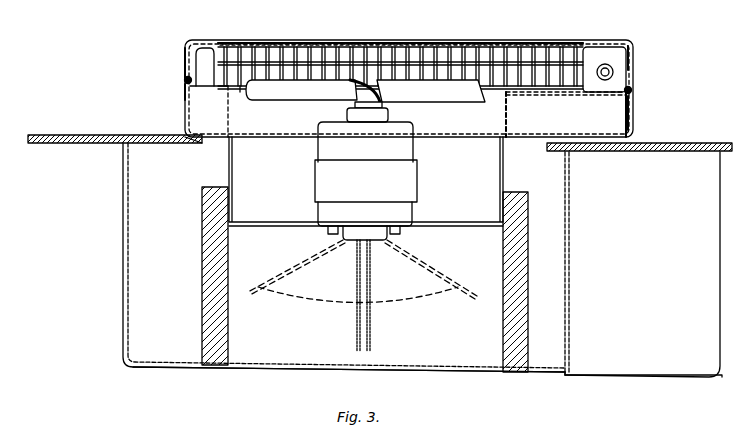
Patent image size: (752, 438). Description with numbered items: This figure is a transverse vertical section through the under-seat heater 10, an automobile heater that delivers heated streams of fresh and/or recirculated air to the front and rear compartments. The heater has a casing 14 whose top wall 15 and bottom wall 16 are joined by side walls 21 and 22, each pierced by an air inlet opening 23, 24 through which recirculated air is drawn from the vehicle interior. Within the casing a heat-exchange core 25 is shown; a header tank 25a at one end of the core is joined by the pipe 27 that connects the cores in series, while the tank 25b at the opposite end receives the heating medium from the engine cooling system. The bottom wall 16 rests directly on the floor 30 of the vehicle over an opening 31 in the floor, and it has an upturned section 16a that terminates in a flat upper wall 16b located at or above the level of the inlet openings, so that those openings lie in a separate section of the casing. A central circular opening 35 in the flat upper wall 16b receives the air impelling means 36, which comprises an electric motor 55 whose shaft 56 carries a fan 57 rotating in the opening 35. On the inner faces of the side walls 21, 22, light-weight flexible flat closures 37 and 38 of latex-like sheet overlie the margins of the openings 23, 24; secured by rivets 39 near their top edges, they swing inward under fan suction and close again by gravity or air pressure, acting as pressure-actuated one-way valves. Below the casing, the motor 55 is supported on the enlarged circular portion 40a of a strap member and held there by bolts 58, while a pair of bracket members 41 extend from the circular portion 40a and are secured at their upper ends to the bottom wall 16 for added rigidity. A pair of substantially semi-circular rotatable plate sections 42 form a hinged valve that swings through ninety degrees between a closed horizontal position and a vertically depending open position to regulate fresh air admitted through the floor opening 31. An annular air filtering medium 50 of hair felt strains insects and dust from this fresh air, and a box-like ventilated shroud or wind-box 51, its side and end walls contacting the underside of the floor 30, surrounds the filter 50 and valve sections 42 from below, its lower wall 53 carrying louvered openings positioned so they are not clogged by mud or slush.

The heater 10 is at (188, 40).
The casing 14 is at (604, 42).
The top wall 15 is at (326, 42).
The bottom wall 16 is at (598, 137).
The upturned section 16a is at (505, 118).
The flat upper wall 16b is at (210, 92).
The side wall 21 is at (183, 68).
The side wall 22 is at (635, 54).
The air inlet opening 23 is at (183, 95).
The air inlet opening 24 is at (636, 106).
The heat-exchange core 25 is at (410, 58).
The header tank 25a is at (612, 56).
The tank 25b is at (206, 52).
The pipe 27 is at (613, 72).
The floor 30 is at (40, 144).
The opening 31 is at (200, 140).
The central circular opening 35 is at (238, 88).
The air impelling means 36 is at (370, 149).
The flexible flat closure 37 is at (190, 125).
The flexible flat closure 38 is at (625, 118).
The rivets 39 is at (185, 80).
The enlarged circular portion 40a is at (326, 233).
The bracket members 41 is at (246, 215).
The rotatable plate sections 42 is at (358, 298).
The annular air filtering medium 50 is at (200, 325).
The shroud or wind-box 51 is at (130, 243).
The lower wall 53 is at (148, 360).
The electric motor 55 is at (320, 172).
The shaft 56 is at (384, 106).
The fan 57 is at (278, 95).
The bolts 58 is at (398, 234).